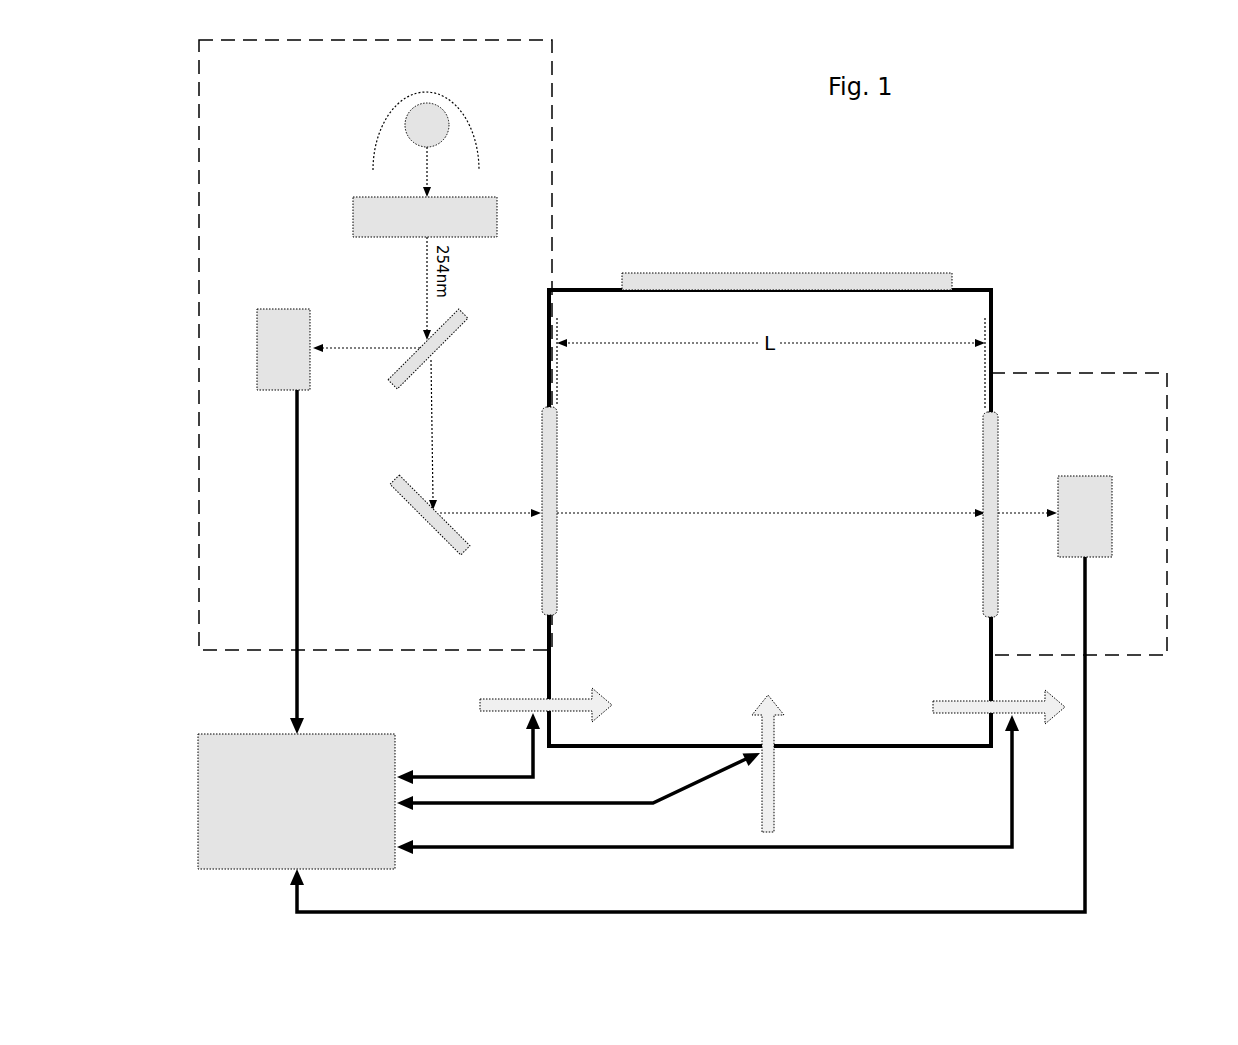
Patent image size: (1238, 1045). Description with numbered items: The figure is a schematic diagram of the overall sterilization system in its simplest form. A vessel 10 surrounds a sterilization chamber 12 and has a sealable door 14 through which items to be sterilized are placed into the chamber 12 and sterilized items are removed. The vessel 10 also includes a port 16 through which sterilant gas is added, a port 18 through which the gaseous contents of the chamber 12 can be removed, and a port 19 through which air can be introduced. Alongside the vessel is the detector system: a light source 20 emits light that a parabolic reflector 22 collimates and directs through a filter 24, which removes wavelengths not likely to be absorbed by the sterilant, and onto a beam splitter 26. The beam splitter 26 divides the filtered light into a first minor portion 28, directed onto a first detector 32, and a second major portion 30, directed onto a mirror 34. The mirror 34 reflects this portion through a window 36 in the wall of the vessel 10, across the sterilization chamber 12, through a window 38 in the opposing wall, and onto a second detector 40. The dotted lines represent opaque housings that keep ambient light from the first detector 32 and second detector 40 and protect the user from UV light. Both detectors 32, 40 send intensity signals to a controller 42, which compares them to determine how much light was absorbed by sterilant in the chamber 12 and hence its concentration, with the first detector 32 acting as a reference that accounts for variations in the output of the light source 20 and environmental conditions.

The vessel 10 is at (883, 750).
The sterilization chamber 12 is at (771, 559).
The sealable door 14 is at (887, 275).
The port 16 is at (763, 773).
The port 18 is at (1014, 705).
The port 19 is at (486, 712).
The light source 20 is at (448, 127).
The parabolic reflector 22 is at (382, 118).
The filter 24 is at (353, 215).
The beam splitter 26 is at (460, 337).
The first minor portion 28 is at (365, 350).
The second major portion 30 is at (435, 482).
The first detector 32 is at (280, 307).
The mirror 34 is at (428, 523).
The window 36 is at (557, 463).
The window 38 is at (983, 460).
The second detector 40 is at (1113, 517).
The controller 42 is at (198, 753).